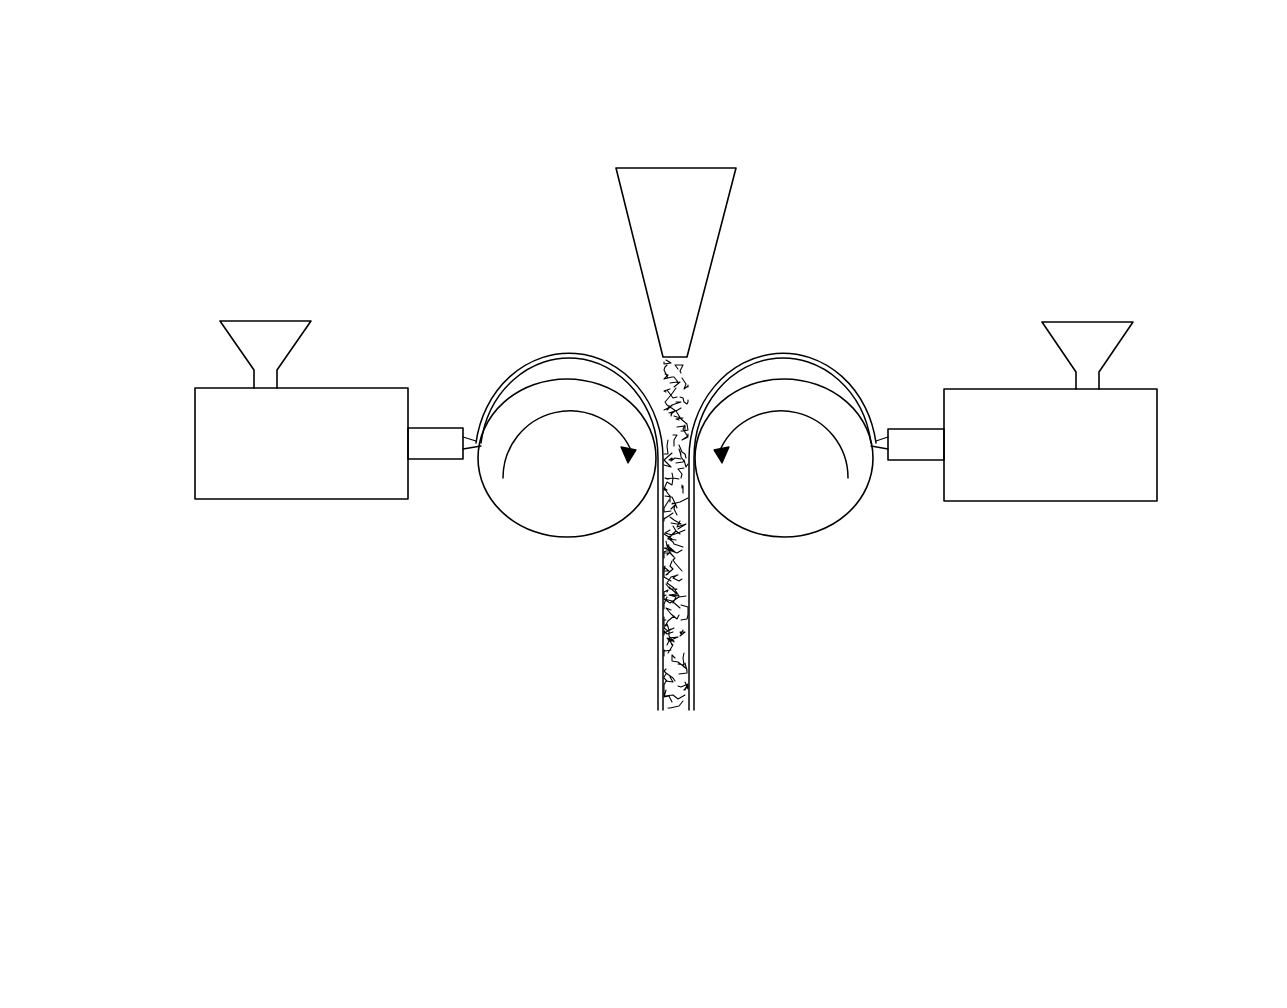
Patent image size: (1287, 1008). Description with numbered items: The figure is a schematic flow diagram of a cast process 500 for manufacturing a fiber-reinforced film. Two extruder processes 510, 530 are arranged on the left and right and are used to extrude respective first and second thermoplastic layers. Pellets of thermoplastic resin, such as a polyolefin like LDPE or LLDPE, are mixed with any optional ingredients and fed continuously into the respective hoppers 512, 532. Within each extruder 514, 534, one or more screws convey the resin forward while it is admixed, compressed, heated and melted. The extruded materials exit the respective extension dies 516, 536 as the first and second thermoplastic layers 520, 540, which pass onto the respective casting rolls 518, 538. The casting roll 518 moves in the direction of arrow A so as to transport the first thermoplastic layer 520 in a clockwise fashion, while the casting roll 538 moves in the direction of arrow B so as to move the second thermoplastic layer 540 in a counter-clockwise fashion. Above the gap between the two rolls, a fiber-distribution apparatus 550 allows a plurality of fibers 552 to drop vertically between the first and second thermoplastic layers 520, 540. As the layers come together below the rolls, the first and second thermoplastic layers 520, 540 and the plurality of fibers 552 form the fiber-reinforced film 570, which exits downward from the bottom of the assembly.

The cast process 500 is at (216, 682).
The extruder process 510 is at (178, 546).
The hopper 512 is at (242, 320).
The extruder 514 is at (375, 388).
The extension die 516 is at (438, 428).
The casting roll 518 is at (582, 539).
The first thermoplastic layer 520 is at (532, 358).
The extruder process 530 is at (1127, 570).
The hopper 532 is at (1086, 322).
The extruder 534 is at (1157, 435).
The extension die 536 is at (923, 429).
The casting roll 538 is at (823, 538).
The second thermoplastic layer 540 is at (803, 353).
The fiber-distribution apparatus 550 is at (644, 168).
The fibers 552 is at (649, 368).
The fiber-reinforced film 570 is at (661, 741).
The arrow A is at (567, 380).
The arrow B is at (797, 382).